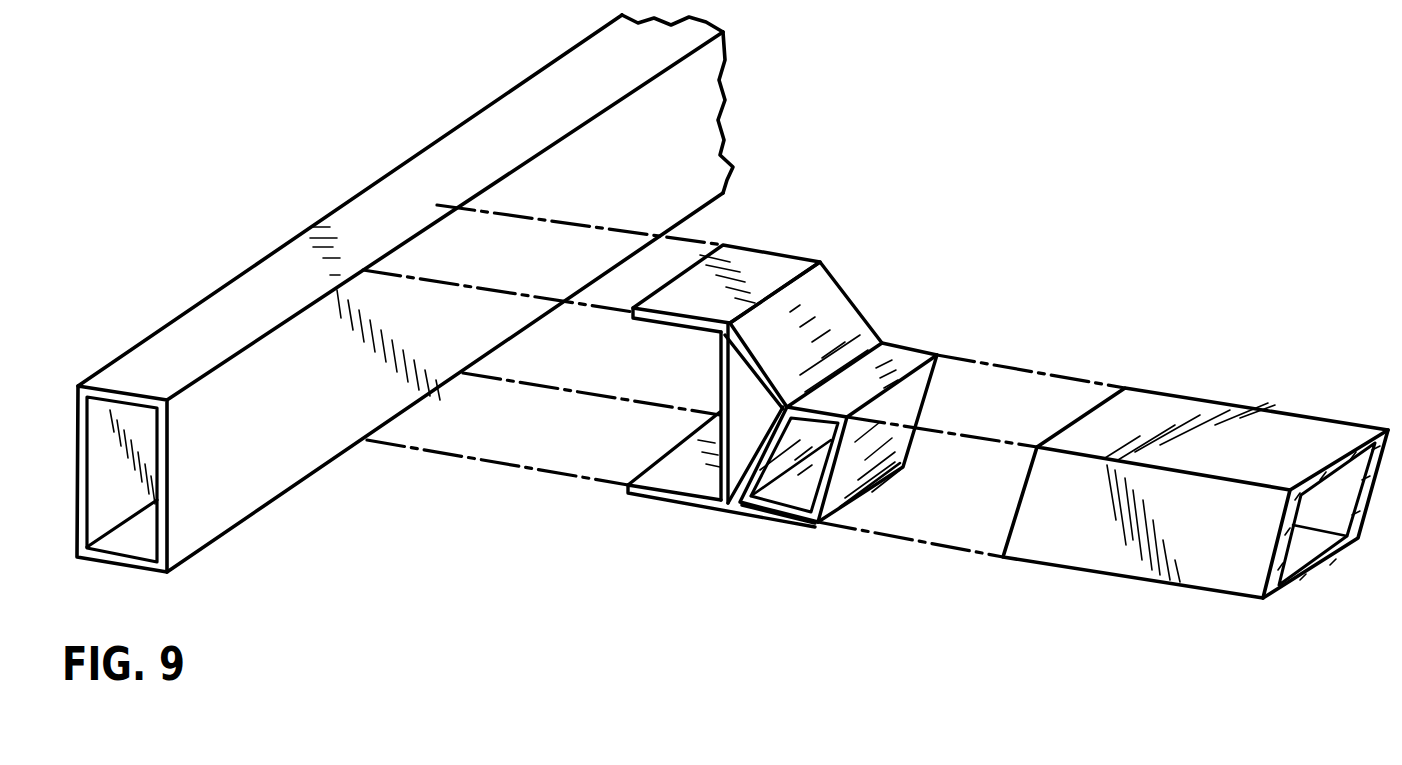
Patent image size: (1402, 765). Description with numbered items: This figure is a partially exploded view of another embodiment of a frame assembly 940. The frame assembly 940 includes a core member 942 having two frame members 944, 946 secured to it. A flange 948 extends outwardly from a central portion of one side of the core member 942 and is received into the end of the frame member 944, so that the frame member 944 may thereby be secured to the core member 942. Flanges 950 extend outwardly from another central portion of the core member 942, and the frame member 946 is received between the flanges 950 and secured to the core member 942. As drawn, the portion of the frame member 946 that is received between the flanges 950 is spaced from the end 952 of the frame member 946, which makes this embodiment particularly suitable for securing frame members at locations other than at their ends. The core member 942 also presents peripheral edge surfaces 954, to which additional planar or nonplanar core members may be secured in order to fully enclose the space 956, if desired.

The frame assembly 940 is at (892, 264).
The core member 942 is at (860, 315).
The frame member 944 is at (1198, 405).
The frame member 946 is at (253, 495).
The flange 948 is at (903, 358).
The flanges 950 is at (773, 265).
The end of frame member 952 is at (128, 563).
The peripheral edge surfaces 954 is at (717, 393).
The space 956 is at (734, 424).